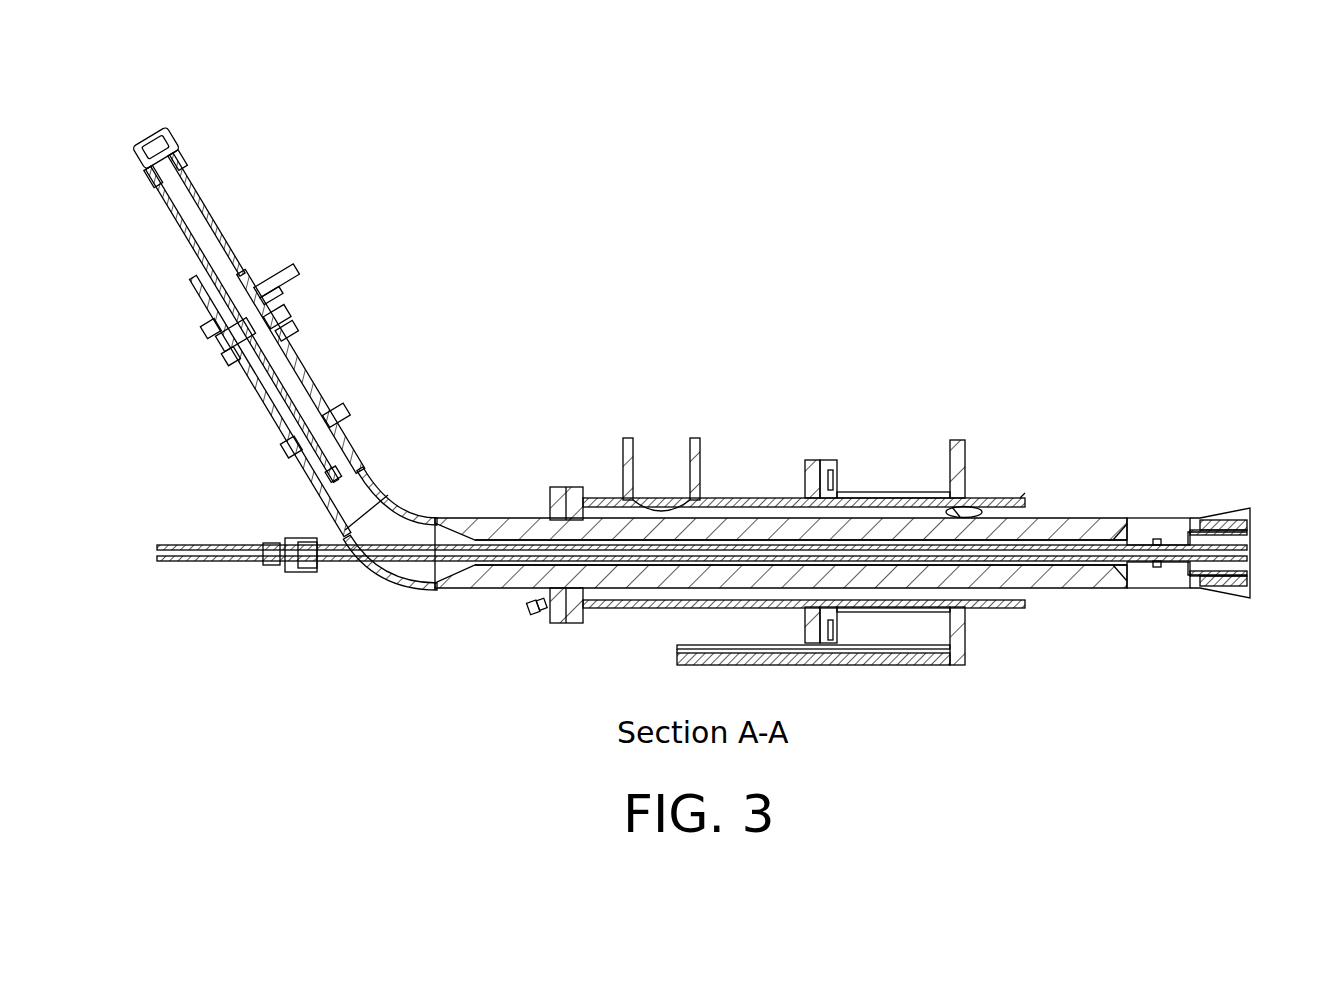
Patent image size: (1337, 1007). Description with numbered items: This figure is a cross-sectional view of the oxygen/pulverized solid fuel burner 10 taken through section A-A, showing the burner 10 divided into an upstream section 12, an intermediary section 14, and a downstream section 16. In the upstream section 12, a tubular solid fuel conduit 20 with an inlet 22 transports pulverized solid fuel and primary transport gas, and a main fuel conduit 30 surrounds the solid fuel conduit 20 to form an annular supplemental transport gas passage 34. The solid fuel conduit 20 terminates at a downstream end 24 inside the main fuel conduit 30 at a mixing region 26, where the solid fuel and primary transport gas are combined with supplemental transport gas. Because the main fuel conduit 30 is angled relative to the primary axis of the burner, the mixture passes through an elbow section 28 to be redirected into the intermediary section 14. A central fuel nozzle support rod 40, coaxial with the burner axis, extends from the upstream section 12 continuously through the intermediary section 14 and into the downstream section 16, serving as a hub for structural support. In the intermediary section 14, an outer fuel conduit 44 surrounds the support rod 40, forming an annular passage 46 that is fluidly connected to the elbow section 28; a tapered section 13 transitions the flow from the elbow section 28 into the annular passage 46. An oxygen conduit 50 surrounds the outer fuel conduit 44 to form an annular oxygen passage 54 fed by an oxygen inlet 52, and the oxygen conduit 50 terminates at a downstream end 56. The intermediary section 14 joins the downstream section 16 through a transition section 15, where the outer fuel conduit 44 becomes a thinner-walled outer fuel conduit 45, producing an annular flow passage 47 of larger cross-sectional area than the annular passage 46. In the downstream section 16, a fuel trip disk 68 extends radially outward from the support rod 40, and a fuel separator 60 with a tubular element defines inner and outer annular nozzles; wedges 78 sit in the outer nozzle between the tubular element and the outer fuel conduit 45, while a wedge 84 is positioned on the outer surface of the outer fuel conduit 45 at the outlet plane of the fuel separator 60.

The oxygen/pulverized solid fuel burner 10 is at (825, 335).
The upstream section 12 is at (340, 302).
The tapered section 13 is at (458, 512).
The intermediary section 14 is at (545, 640).
The transition section 15 is at (1118, 528).
The downstream section 16 is at (1130, 610).
The solid fuel conduit 20 is at (212, 230).
The inlet 22 is at (152, 128).
The downstream end 24 is at (365, 462).
The mixing region 26 is at (347, 500).
The elbow section 28 is at (418, 500).
The main fuel conduit 30 is at (340, 400).
The supplemental transport gas passage 34 is at (318, 372).
The fuel nozzle support rod 40 is at (190, 562).
The outer fuel conduit 44 is at (480, 592).
The thinner-walled outer fuel conduit 45 is at (1182, 527).
The annular passage 46 is at (515, 545).
The annular flow passage 47 is at (1138, 532).
The oxygen conduit 50 is at (580, 498).
The oxygen inlet 52 is at (660, 438).
The annular oxygen passage 54 is at (735, 508).
The downstream end 56 is at (1028, 500).
The fuel separator 60 is at (1182, 570).
The fuel trip disk 68 is at (1156, 539).
The wedges 78 is at (1250, 575).
The wedge 84 is at (1240, 518).